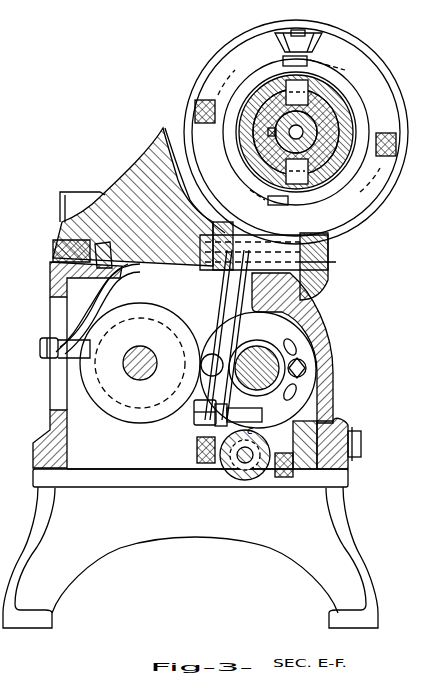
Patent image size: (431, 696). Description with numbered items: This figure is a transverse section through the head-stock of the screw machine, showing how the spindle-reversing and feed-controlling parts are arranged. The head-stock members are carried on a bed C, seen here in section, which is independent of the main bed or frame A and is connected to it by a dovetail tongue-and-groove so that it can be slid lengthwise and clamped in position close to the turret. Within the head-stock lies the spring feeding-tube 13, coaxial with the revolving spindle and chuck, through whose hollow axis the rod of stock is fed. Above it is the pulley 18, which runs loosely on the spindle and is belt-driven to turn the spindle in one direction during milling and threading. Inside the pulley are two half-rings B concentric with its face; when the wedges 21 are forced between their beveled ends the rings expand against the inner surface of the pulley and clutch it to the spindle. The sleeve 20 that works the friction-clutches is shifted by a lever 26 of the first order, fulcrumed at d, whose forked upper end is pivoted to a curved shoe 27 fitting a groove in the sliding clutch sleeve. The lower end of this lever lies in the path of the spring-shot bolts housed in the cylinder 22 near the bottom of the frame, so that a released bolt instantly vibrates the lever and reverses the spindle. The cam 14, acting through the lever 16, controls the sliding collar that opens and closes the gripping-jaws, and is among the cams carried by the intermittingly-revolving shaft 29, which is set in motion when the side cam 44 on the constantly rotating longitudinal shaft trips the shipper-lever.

The main bed or frame A is at (50, 312).
The bed for supporting the head-stock members C is at (132, 172).
The spring feeding-tube 13 is at (362, 117).
The cam 14 is at (140, 363).
The lever 16 is at (97, 304).
The pulley 18 is at (296, 132).
The sleeve for working the friction-clutches 20 is at (341, 117).
The wedges 21 is at (298, 41).
The cylinder 22 is at (245, 458).
The lever of the first order 26 is at (264, 245).
The curved shoe 27 is at (299, 131).
The intermittingly-revolving shaft 29 is at (152, 360).
The side cam 44 is at (258, 370).
The half-rings B is at (295, 42).
The fulcrum d is at (330, 262).